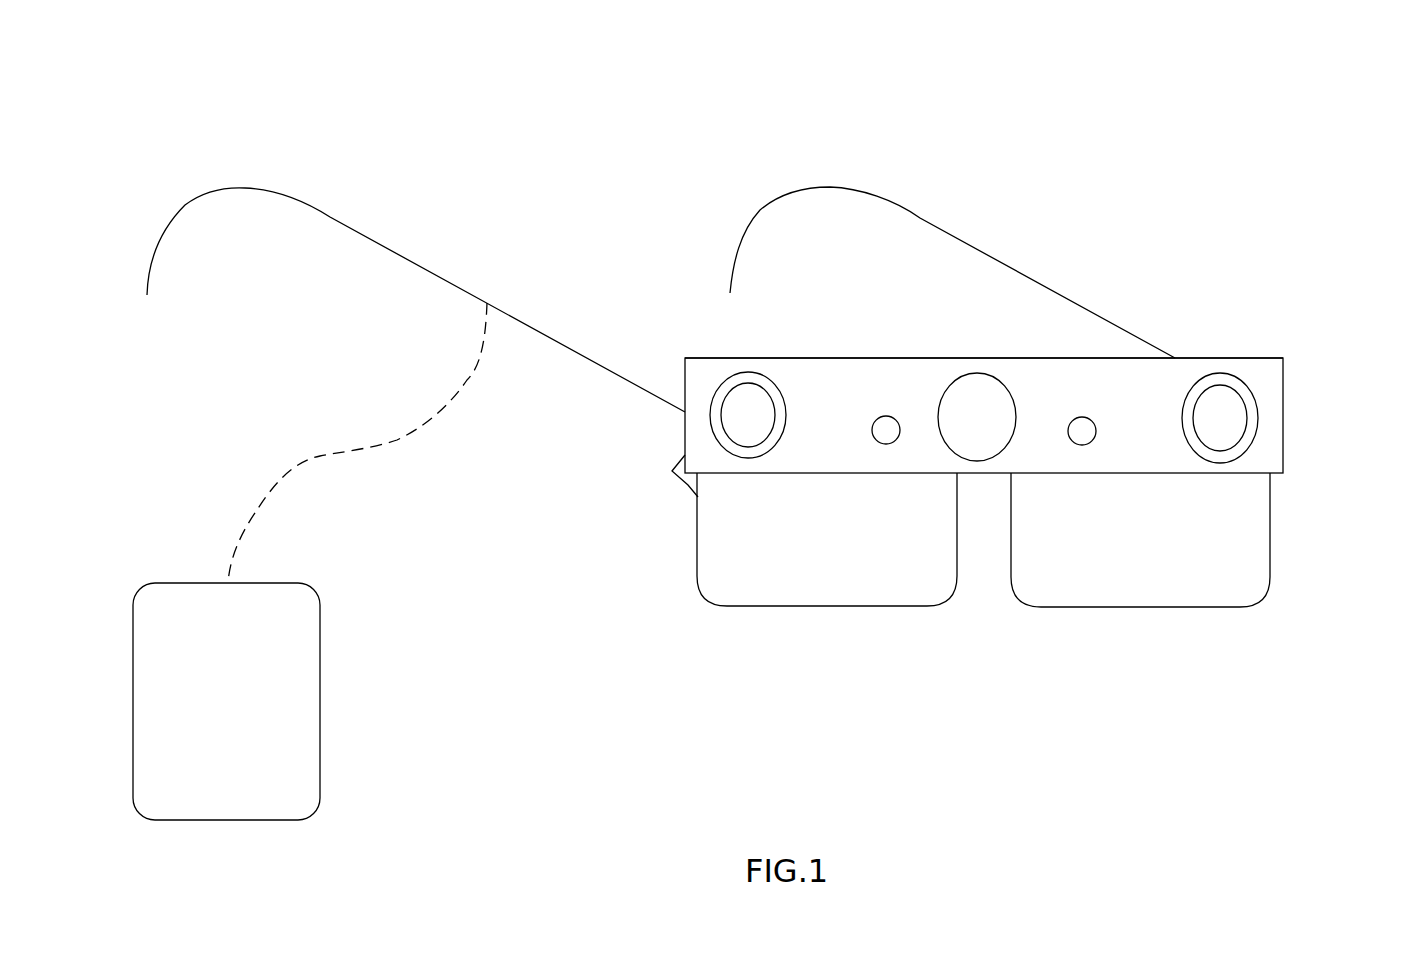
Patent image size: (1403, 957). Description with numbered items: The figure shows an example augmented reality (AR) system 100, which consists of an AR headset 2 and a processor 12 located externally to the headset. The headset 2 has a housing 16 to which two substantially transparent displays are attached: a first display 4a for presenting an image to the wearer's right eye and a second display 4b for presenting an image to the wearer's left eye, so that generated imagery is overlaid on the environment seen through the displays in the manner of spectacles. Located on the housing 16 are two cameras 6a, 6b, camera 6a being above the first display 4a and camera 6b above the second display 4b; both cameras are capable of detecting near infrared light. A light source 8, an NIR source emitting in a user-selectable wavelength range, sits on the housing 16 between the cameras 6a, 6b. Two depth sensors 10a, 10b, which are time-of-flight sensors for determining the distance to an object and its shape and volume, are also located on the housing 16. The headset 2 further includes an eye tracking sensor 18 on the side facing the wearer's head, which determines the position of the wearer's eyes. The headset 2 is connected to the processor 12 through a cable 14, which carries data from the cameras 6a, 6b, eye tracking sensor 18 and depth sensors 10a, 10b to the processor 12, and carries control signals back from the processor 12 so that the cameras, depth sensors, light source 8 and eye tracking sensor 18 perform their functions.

The augmented reality system 100 is at (390, 120).
The augmented reality headset 2 is at (1200, 285).
The first display 4a is at (872, 574).
The second display 4b is at (1188, 578).
The camera 6a is at (740, 410).
The camera 6b is at (1233, 418).
The light source 8 is at (976, 390).
The depth sensor 10a is at (886, 416).
The depth sensor 10b is at (1082, 417).
The processor 12 is at (285, 702).
The cable 14 is at (282, 483).
The housing 16 is at (760, 358).
The eye tracking sensor 18 is at (688, 481).